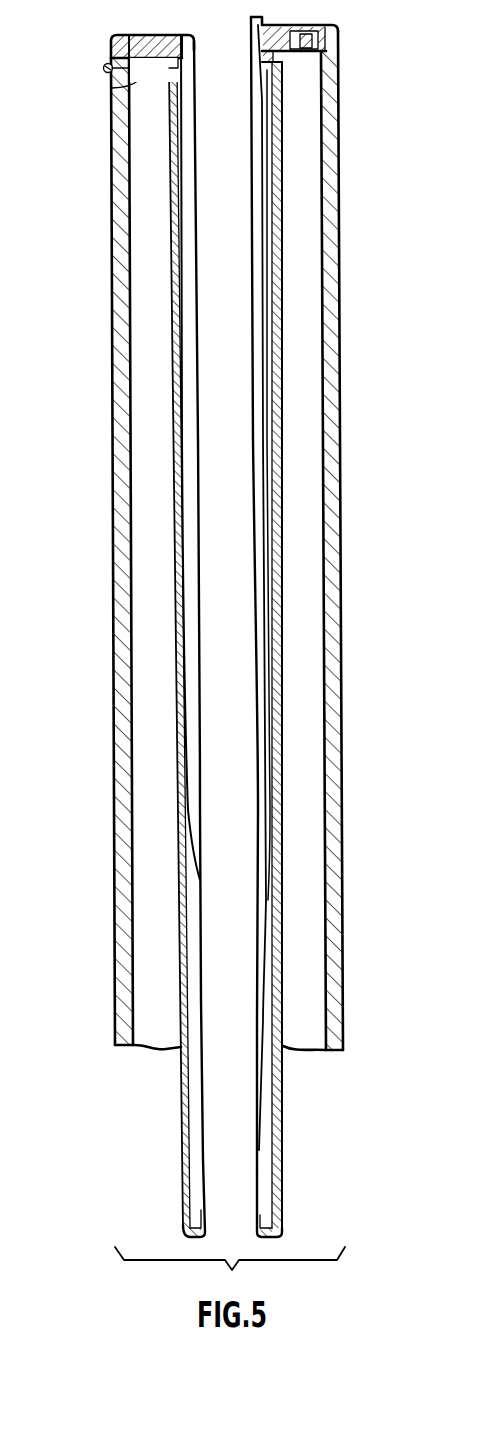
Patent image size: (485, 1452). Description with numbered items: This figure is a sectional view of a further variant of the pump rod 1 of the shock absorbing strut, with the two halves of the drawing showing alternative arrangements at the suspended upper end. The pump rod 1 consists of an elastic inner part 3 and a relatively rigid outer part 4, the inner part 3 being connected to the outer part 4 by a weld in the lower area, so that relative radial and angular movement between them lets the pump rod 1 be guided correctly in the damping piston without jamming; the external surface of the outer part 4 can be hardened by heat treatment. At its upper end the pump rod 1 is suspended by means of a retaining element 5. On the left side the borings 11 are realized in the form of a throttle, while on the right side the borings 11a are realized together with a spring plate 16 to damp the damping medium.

The pump rod 1 is at (158, 480).
The inner part 3 is at (190, 623).
The outer part 4 is at (175, 820).
The retaining element 5 is at (112, 88).
The borings 11 is at (126, 47).
The borings 11a is at (296, 50).
The spring plate 16 is at (303, 22).